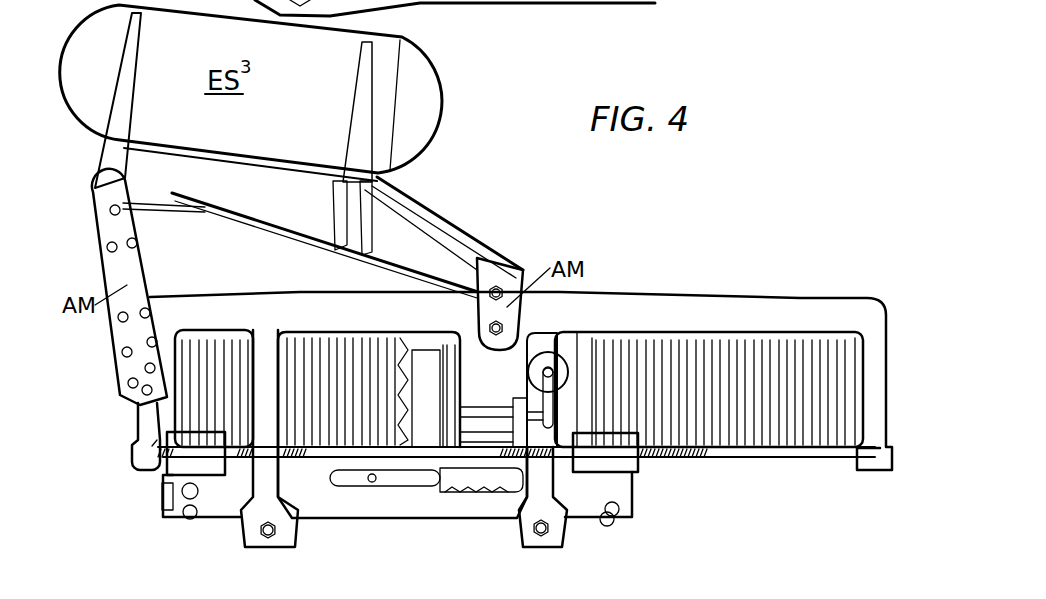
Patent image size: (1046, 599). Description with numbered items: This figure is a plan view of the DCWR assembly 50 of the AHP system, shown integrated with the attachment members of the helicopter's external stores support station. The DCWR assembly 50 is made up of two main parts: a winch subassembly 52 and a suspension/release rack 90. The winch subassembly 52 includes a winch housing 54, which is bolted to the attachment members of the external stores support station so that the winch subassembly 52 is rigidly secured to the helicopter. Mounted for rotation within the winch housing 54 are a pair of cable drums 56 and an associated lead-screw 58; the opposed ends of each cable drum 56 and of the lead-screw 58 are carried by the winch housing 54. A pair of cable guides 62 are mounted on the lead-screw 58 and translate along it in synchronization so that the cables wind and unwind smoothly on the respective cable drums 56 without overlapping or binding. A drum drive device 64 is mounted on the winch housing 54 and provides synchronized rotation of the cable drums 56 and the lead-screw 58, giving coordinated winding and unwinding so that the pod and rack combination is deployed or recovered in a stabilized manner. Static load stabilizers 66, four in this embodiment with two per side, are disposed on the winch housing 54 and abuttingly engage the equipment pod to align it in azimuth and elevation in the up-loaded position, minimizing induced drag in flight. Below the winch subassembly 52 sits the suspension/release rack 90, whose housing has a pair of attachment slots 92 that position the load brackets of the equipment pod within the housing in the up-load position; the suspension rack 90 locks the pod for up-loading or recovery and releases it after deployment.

The DCWR assembly 50 is at (668, 240).
The winch subassembly 52 is at (127, 432).
The winch housing 54 is at (673, 313).
The cable drums 56 is at (352, 363).
The lead-screw 58 is at (670, 460).
The cable guides 62 is at (173, 463).
The drum drive device 64 is at (563, 348).
The static load stabilizers 66 is at (253, 507).
The suspension/release rack 90 is at (386, 535).
The attachment slots 92 is at (185, 515).